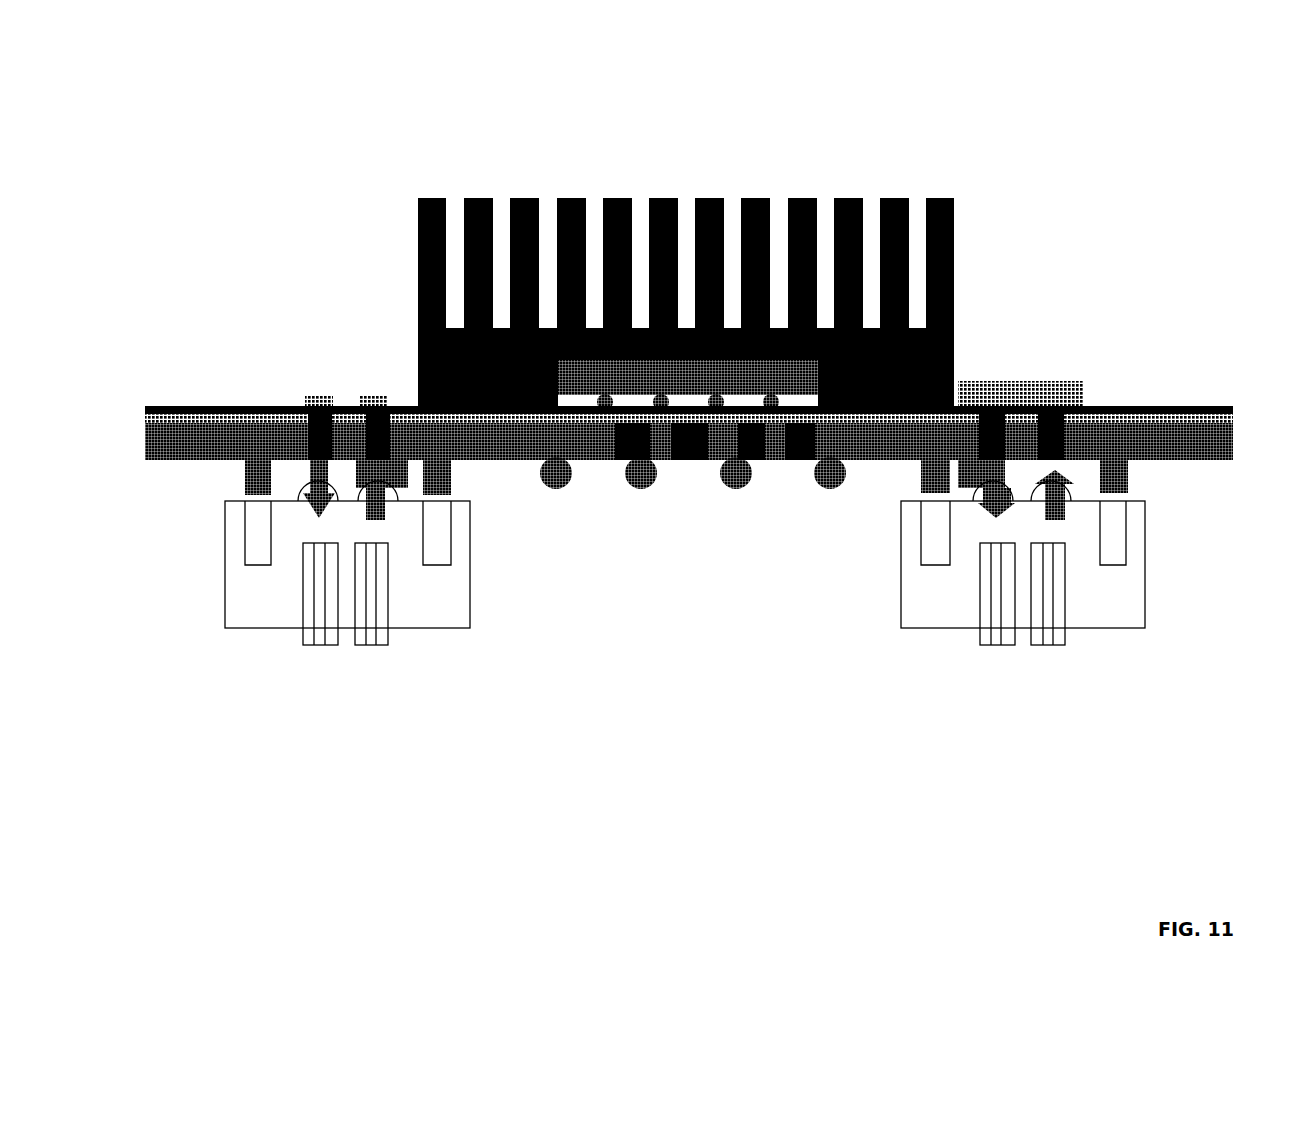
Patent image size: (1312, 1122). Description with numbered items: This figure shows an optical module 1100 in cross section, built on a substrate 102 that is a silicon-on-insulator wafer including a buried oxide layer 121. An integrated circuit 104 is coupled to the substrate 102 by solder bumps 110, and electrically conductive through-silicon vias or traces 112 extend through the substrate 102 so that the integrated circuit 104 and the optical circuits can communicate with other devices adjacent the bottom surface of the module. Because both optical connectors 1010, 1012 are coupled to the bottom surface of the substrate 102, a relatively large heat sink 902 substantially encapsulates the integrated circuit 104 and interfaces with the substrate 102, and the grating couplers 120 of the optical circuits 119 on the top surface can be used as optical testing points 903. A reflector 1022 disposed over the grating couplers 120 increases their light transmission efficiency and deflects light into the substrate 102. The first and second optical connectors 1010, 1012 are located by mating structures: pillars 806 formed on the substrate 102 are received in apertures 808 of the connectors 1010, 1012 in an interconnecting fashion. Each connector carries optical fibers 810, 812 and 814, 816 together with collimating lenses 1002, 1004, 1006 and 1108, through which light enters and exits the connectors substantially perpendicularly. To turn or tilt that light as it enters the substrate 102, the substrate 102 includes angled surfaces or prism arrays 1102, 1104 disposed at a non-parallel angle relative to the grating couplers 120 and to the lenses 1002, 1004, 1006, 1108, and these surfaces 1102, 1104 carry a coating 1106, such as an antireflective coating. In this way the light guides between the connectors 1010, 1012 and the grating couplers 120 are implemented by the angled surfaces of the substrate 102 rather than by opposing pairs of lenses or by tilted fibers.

The electronic assembly 1100 is at (540, 66).
The heat sink 902 is at (418, 192).
The optical testing points 903 is at (393, 298).
The integrated circuit 104 is at (702, 400).
The substrate 102 is at (158, 436).
The buried oxide (BOX) layer 121 is at (1212, 425).
The optical circuits 119 is at (318, 372).
The grating couplers 120 is at (303, 396).
The reflector 1022 is at (1012, 385).
The angled surface or prism array 1102 is at (297, 445).
The angled surface or prism array 1104 is at (1055, 450).
The coating 1106 is at (277, 455).
The pillars 806 is at (252, 470).
The first optical connector 1010 is at (449, 603).
The second optical connector 1012 is at (1127, 603).
The collimating lens 1002 is at (295, 495).
The collimating lens 1004 is at (385, 495).
The collimating lens 1006 is at (970, 495).
The connector contact 1108 is at (1062, 495).
The apertures 808 is at (242, 543).
The optical fiber 810 is at (300, 634).
The optical fiber 812 is at (376, 634).
The optical fiber 814 is at (978, 632).
The optical fiber 816 is at (1055, 632).
The through-silicon vias and/or traces 112 is at (630, 474).
The solder bumps 110 is at (815, 478).